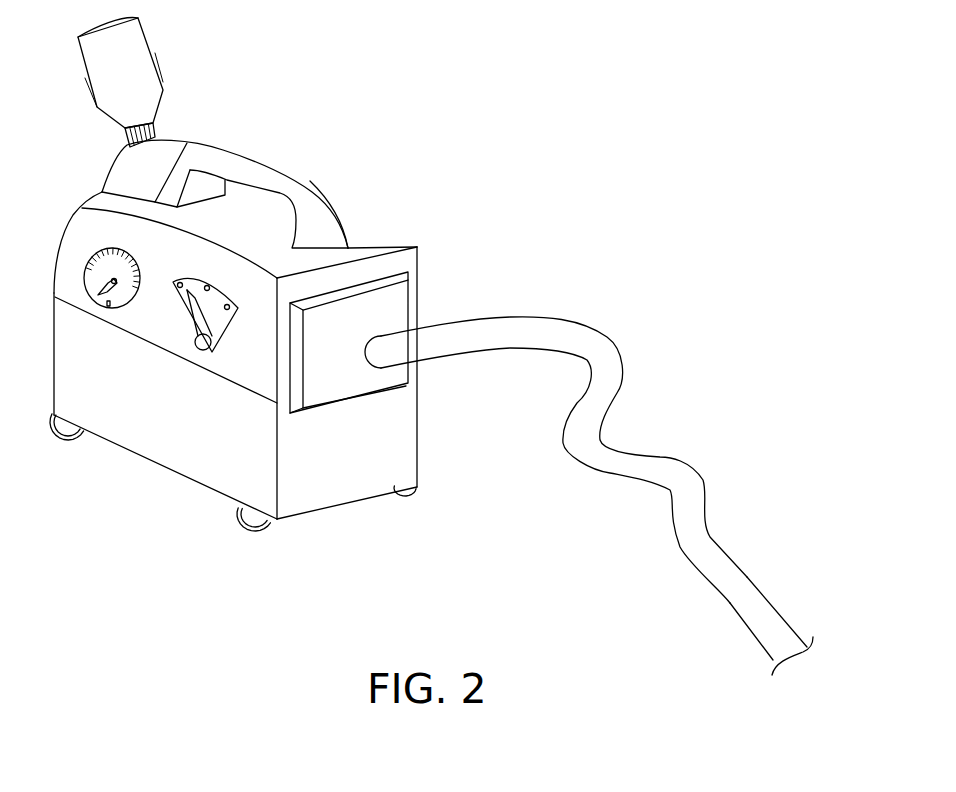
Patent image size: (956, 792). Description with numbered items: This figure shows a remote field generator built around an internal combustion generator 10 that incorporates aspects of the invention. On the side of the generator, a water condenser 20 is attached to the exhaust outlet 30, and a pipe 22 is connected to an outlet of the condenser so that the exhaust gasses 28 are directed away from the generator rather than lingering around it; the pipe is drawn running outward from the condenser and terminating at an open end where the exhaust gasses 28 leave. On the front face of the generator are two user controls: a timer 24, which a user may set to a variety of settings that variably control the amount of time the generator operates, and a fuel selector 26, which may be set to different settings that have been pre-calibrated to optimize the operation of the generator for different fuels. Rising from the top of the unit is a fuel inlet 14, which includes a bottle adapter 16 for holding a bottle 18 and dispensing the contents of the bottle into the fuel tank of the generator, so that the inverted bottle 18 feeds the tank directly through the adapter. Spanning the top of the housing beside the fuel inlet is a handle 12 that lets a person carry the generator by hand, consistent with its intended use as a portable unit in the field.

The internal combustion generator 10 is at (380, 186).
The handle 12 is at (297, 174).
The fuel inlet 14 is at (155, 127).
The bottle adapter 16 is at (160, 72).
The bottle 18 is at (140, 37).
The water condenser 20 is at (403, 303).
The pipe 22 is at (540, 322).
The timer 24 is at (93, 252).
The fuel selector 26 is at (188, 314).
The exhaust gasses 28 is at (799, 676).
The exhaust outlet 30 is at (398, 398).